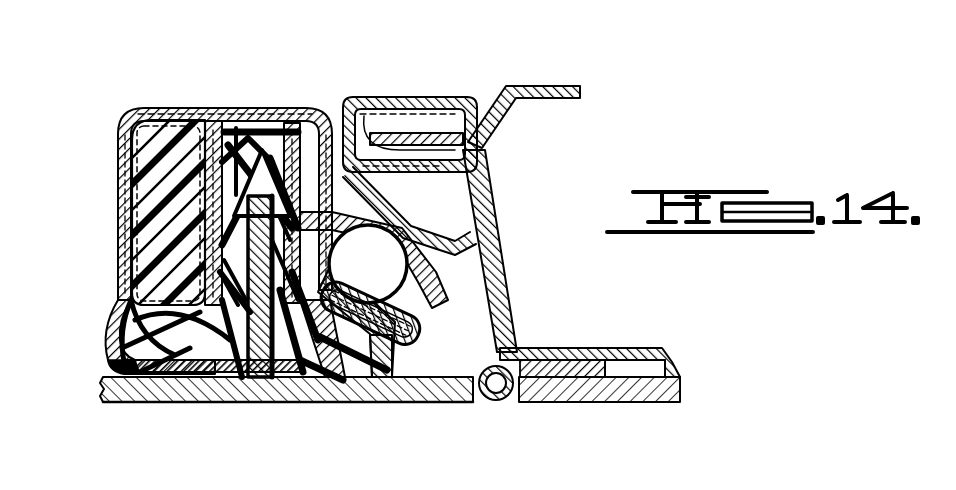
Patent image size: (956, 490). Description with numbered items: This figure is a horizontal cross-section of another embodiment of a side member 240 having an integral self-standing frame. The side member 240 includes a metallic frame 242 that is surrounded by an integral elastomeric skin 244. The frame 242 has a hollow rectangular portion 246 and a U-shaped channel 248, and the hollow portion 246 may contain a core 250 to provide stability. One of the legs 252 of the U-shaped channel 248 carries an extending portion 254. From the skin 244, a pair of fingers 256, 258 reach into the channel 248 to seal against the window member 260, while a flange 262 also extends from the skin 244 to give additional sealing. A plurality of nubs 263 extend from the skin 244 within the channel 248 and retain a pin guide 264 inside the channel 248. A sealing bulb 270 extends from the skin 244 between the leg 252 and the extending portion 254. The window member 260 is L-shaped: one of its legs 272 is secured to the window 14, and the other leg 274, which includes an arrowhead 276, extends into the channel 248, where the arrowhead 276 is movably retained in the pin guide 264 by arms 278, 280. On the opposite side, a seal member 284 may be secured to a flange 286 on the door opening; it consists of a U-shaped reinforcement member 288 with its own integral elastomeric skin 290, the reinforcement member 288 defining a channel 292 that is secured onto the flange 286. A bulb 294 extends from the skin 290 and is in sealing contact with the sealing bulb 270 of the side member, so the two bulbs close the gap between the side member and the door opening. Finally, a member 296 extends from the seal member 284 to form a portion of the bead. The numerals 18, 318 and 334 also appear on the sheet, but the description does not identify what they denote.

The window 14 is at (105, 401).
The base plate portion 18 is at (615, 399).
The side member 240 is at (157, 60).
The metallic frame 242 is at (113, 355).
The elastomeric skin 244 is at (125, 290).
The hollow rectangular portion 246 is at (124, 158).
The U-shaped channel 248 is at (338, 262).
The core 250 is at (140, 126).
The leg 252 is at (328, 401).
The extending portion 254 is at (426, 315).
The finger 256 is at (214, 378).
The finger 258 is at (270, 398).
The window member 260 is at (390, 368).
The flange 262 is at (140, 401).
The nubs 263 is at (185, 248).
The pin guide 264 is at (252, 112).
The sealing bulb 270 is at (424, 286).
The leg 272 is at (380, 393).
The leg 274 is at (250, 402).
The arrowhead 276 is at (292, 112).
The arm 278 is at (224, 120).
The arm 280 is at (300, 118).
The seal member 284 is at (455, 78).
The flange 286 is at (462, 143).
The U-shaped reinforcement member 288 is at (472, 118).
The elastomeric skin 290 is at (455, 170).
The channel 292 is at (392, 112).
The bulb 294 is at (409, 211).
The member 296 is at (496, 401).
The element of adjacent figure 318 is at (698, 10).
The element of adjacent figure 334 is at (803, 5).